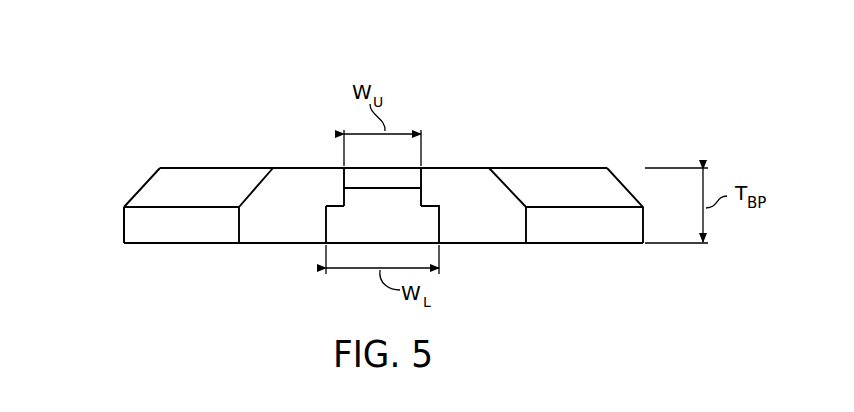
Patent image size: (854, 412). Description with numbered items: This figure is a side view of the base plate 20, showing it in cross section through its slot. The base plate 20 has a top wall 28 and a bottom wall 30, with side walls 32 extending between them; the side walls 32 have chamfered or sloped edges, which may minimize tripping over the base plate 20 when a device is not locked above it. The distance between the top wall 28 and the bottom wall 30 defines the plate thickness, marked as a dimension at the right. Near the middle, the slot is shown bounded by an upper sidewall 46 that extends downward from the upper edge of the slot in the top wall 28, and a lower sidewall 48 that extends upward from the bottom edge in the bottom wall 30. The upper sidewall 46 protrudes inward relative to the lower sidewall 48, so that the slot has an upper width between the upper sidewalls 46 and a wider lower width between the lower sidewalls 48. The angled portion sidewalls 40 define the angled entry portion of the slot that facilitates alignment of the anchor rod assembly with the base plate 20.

The base plate 20 is at (192, 133).
The top wall 28 is at (567, 168).
The bottom wall 30 is at (177, 245).
The side wall 32 is at (123, 223).
The angled portion sidewall 40 is at (290, 188).
The upper sidewall 46 is at (418, 198).
The lower sidewall 48 is at (330, 217).